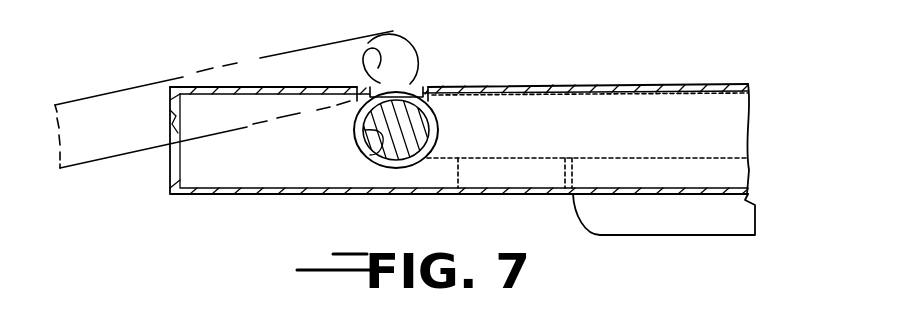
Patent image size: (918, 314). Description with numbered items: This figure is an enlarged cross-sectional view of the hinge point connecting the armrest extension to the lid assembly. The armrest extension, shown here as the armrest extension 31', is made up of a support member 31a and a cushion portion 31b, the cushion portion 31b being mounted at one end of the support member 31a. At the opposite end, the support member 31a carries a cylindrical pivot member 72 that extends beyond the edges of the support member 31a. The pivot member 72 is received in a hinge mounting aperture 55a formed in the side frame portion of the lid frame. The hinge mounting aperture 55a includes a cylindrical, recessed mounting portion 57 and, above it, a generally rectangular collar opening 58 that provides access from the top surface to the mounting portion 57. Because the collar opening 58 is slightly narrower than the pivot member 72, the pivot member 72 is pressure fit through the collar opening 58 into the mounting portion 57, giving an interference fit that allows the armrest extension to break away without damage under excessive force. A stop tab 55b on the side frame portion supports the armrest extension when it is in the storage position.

The rod 31' is at (219, 128).
The support member 31a is at (726, 160).
The cushion portion 31b is at (680, 222).
The hinge mounting aperture 55a is at (377, 155).
The stop tab 55b is at (486, 177).
The mounting portion 57 is at (437, 135).
The pivot member 72 is at (433, 123).
The collar opening 58 is at (380, 83).